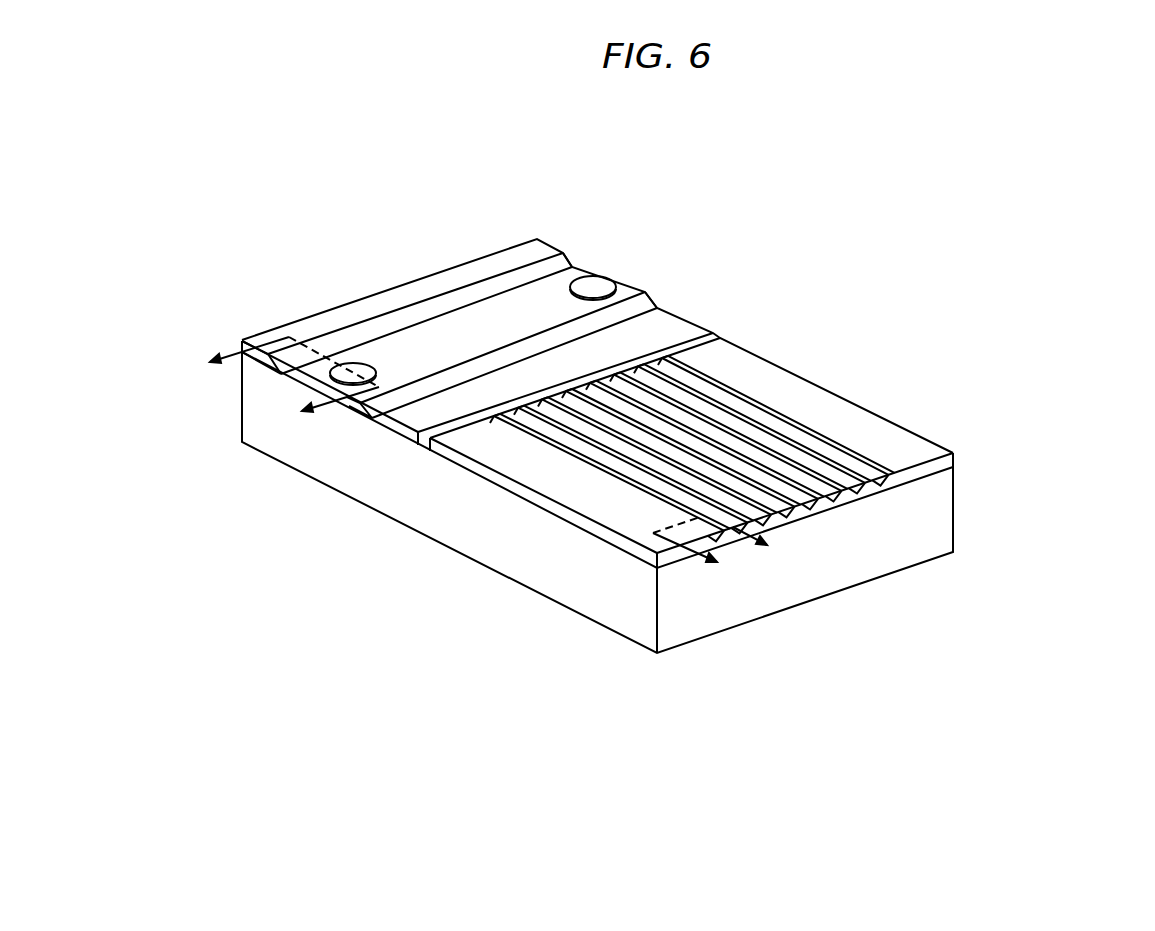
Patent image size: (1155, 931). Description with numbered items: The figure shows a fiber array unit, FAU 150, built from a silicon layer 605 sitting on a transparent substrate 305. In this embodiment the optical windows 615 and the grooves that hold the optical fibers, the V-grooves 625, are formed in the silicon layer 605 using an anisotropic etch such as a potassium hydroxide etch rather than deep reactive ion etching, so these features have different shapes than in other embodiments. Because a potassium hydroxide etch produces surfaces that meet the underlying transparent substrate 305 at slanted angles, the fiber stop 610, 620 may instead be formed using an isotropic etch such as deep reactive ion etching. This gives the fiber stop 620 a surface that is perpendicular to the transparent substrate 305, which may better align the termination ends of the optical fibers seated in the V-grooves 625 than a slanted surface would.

The FAU 150 is at (912, 177).
The transparent substrate 305 is at (828, 572).
The silicon layer 605 is at (953, 454).
The fiber stop 610 is at (582, 287).
The optical windows 615 is at (661, 302).
The fiber stop 620 is at (716, 336).
The V-grooves 625 is at (852, 503).